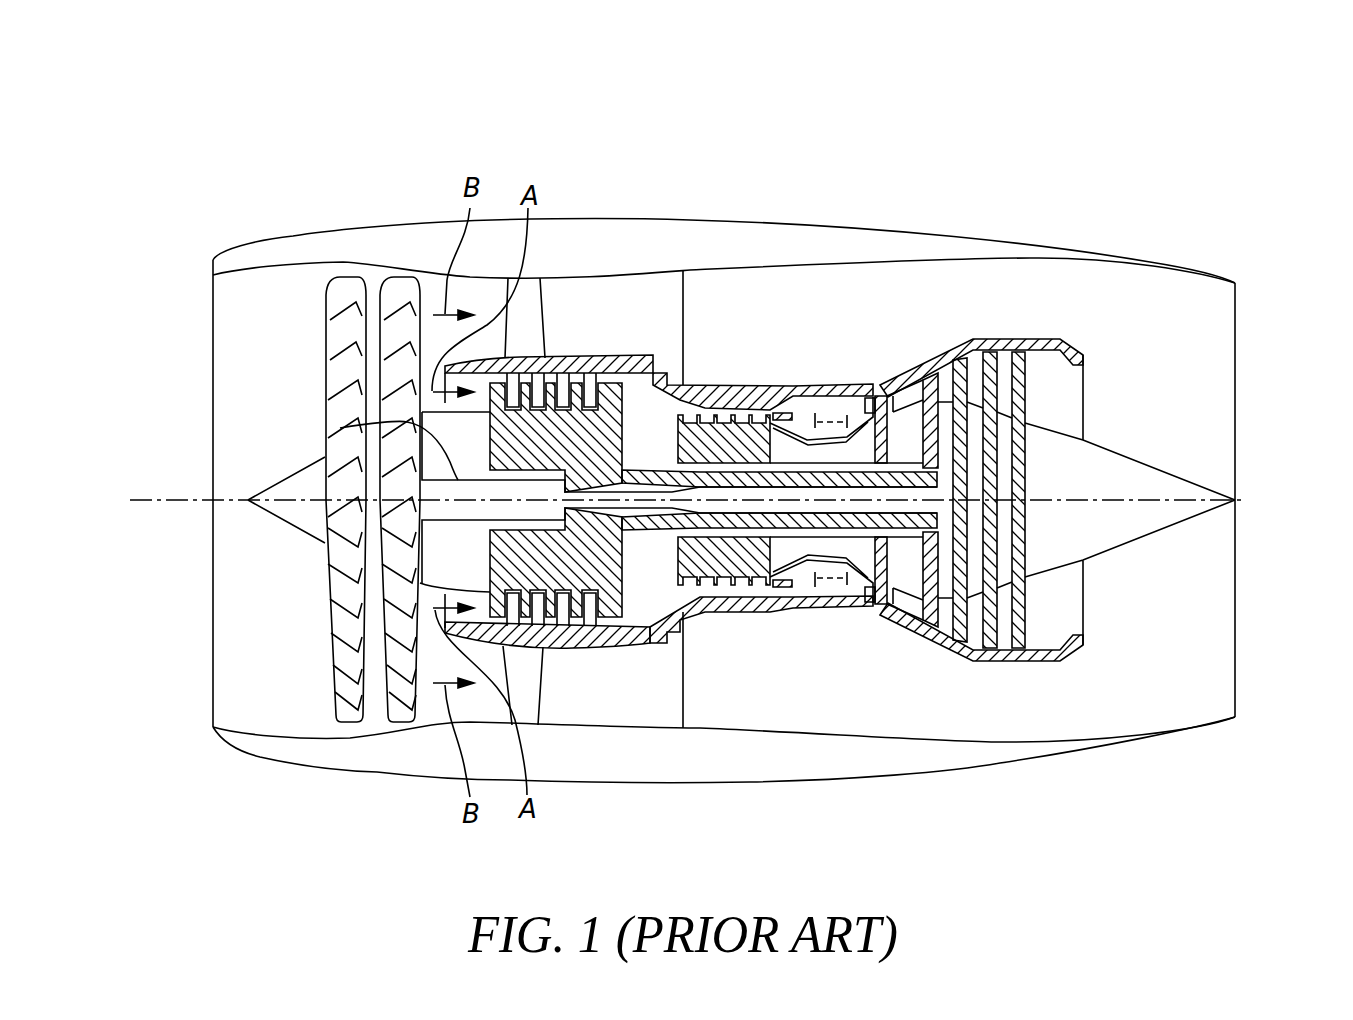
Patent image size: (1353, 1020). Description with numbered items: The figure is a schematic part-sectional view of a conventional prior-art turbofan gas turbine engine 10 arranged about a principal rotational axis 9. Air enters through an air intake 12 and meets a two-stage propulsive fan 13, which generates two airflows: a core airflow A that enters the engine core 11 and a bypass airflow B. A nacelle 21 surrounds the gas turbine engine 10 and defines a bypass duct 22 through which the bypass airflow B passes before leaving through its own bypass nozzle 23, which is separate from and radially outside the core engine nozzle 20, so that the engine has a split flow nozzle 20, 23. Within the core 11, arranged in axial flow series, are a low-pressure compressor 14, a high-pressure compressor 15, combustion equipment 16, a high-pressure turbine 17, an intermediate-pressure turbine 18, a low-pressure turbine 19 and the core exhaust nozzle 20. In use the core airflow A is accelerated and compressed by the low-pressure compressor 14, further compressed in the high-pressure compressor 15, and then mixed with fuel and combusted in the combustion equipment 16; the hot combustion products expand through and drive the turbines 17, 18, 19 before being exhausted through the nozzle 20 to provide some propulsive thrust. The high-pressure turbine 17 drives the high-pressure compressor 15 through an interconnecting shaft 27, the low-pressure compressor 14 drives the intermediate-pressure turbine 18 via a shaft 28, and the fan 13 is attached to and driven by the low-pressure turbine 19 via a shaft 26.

The principal rotational axis 9 is at (133, 500).
The turbofan gas turbine engine 10 is at (733, 117).
The core 11 is at (570, 382).
The air intake 12 is at (280, 332).
The two-stage propulsive fan 13 is at (405, 278).
The low-pressure compressor 14 is at (553, 372).
The high-pressure compressor 15 is at (700, 415).
The combustion equipment 16 is at (808, 407).
The high-pressure turbine 17 is at (950, 360).
The intermediate-pressure turbine 18 is at (978, 352).
The low-pressure turbine 19 is at (1014, 352).
The core exhaust nozzle 20 is at (1063, 605).
The nacelle 21 is at (413, 229).
The bypass duct 22 is at (592, 700).
The bypass nozzle 23 is at (1063, 707).
The shaft 26 is at (340, 428).
The interconnecting shaft 27 is at (780, 413).
The shaft 28 is at (650, 445).